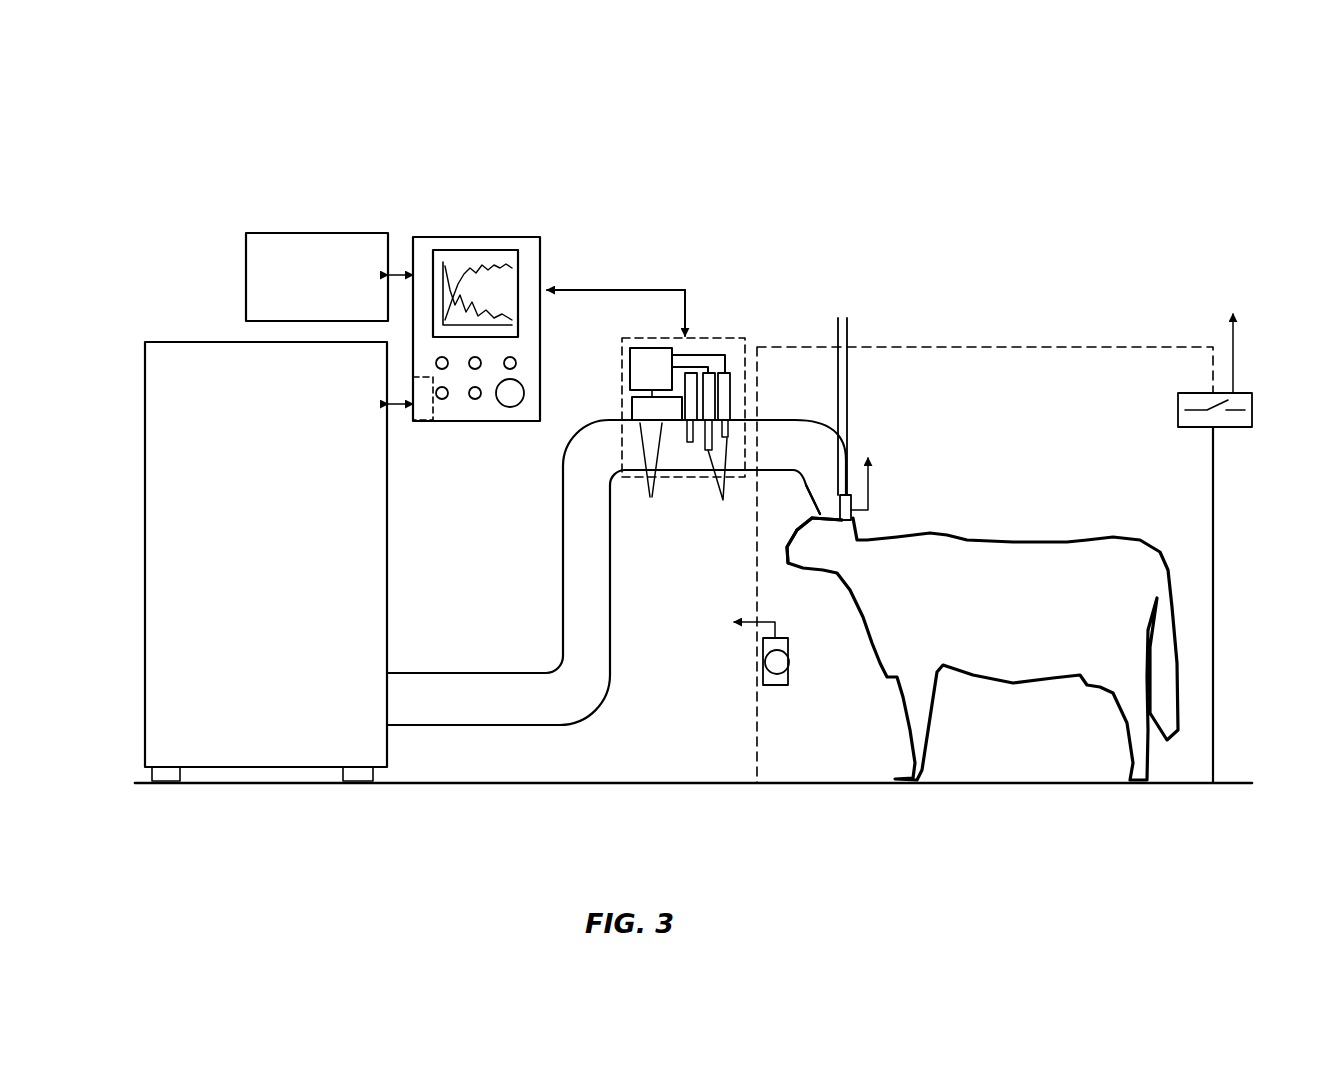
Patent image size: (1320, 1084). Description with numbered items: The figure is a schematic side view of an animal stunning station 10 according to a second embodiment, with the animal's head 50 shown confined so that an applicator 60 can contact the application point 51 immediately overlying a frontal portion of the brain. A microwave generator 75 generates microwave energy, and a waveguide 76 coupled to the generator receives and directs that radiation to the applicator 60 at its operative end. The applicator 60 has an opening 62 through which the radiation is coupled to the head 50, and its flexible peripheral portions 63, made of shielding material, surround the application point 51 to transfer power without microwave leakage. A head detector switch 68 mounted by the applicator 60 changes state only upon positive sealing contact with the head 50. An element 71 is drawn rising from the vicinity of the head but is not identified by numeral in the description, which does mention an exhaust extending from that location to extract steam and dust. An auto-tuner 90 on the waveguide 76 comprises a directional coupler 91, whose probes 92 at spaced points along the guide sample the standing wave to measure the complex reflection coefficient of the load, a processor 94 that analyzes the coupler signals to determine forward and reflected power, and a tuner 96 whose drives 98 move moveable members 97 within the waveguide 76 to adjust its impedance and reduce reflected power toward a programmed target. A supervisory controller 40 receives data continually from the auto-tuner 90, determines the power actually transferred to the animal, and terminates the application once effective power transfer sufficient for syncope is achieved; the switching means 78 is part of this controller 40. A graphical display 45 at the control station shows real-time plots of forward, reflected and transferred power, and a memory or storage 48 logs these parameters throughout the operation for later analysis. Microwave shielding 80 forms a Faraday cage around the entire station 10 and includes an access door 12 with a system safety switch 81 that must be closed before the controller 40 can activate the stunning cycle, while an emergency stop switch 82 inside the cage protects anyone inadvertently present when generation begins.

The stunning station 10 is at (1014, 768).
The access door 12 is at (1218, 596).
The supervisory controller 40 is at (554, 242).
The graphical display 45 is at (483, 292).
The memory or storage 48 is at (317, 277).
The head of the animal 50 is at (825, 550).
The application point 51 is at (838, 525).
The applicator 60 is at (797, 501).
The opening 62 is at (825, 509).
The peripheral portions 63 is at (830, 512).
The head detector switch 68 is at (852, 527).
The support 71 is at (777, 413).
The microwave generator 75 is at (266, 561).
The waveguide 76 is at (583, 575).
The switching means 78 is at (430, 420).
The microwave shielding 80 is at (1024, 345).
The system safety switch 81 is at (1190, 427).
The emergency stop switch 82 is at (767, 663).
The auto-tuner 90 is at (707, 334).
The directional coupler 91 is at (647, 410).
The probes 92 is at (641, 477).
The processor 94 is at (655, 357).
The tuner 96 is at (739, 361).
The moveable members 97 is at (711, 475).
The drives 98 is at (709, 395).